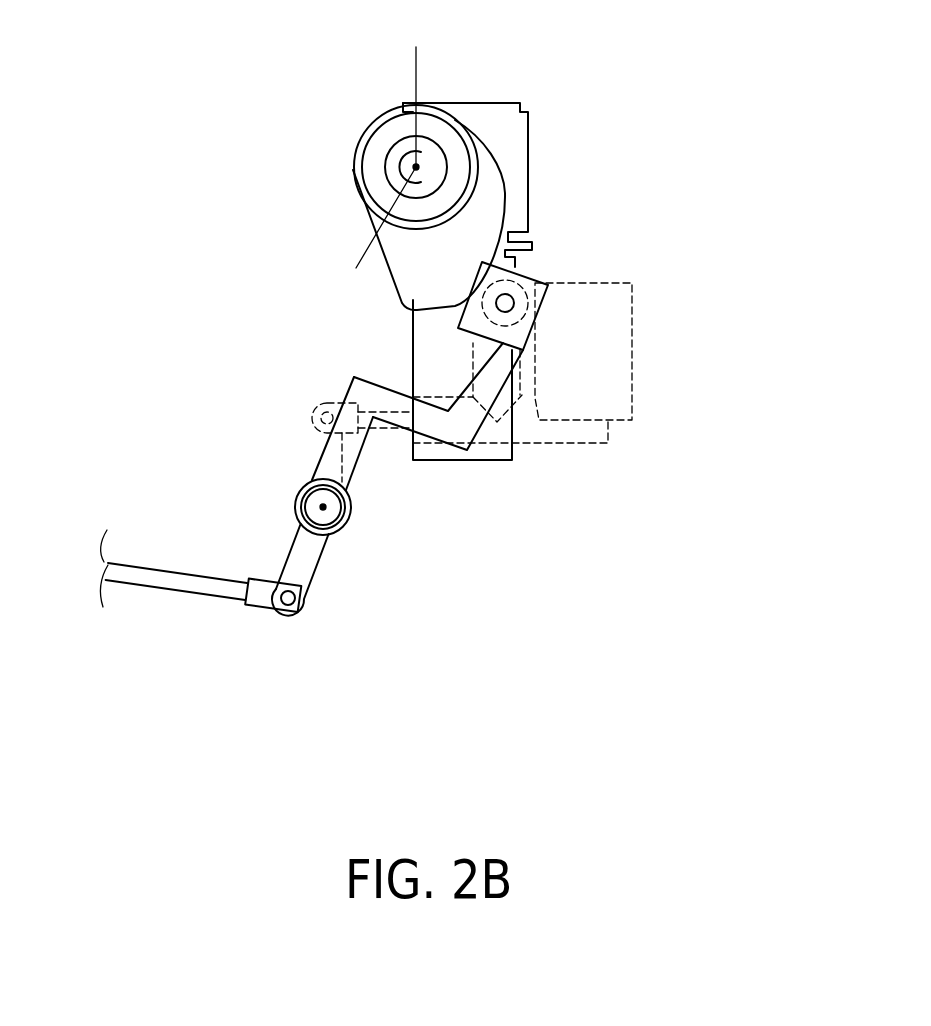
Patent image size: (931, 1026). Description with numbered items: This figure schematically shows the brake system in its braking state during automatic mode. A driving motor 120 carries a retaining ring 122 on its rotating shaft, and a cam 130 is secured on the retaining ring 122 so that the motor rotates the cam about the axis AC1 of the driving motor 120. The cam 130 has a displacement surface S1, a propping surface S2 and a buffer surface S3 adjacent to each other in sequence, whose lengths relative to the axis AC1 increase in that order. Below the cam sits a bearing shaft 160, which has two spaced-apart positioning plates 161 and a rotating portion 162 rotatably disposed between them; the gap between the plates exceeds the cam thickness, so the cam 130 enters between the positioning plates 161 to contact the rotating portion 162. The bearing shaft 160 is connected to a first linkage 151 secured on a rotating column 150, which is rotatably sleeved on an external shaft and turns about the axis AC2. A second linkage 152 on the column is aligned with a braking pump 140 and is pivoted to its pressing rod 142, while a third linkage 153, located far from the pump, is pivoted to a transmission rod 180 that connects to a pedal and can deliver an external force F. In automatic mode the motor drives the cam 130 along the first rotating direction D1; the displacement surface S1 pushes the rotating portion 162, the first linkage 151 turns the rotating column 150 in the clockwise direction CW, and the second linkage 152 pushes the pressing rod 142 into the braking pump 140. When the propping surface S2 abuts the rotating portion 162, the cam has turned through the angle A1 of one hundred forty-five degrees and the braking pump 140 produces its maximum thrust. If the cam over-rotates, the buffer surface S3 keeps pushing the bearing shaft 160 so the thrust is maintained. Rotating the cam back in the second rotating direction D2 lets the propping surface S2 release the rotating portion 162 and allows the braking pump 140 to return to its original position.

The driving motor 120 is at (520, 130).
The retaining ring 122 is at (457, 168).
The cam 130 is at (490, 220).
The braking pump 140 is at (538, 437).
The pressing rod 142 is at (375, 428).
The rotating column 150 is at (302, 495).
The first linkage 151 is at (358, 387).
The second linkage 152 is at (310, 480).
The third linkage 153 is at (303, 577).
The bearing shaft 160 is at (629, 332).
The positioning plates 161 is at (520, 275).
The rotating portion 162 is at (533, 322).
The transmission rod 180 is at (182, 587).
The angle A1 is at (416, 167).
The axis of the driving motor AC1 is at (416, 167).
The axis AC2 is at (323, 507).
The first rotating direction D1 is at (327, 75).
The second rotating direction D2 is at (283, 81).
The displacement surface S1 is at (517, 192).
The propping surface S2 is at (505, 280).
The buffer surface S3 is at (418, 322).
The clockwise direction CW is at (365, 495).
The external force F is at (218, 558).